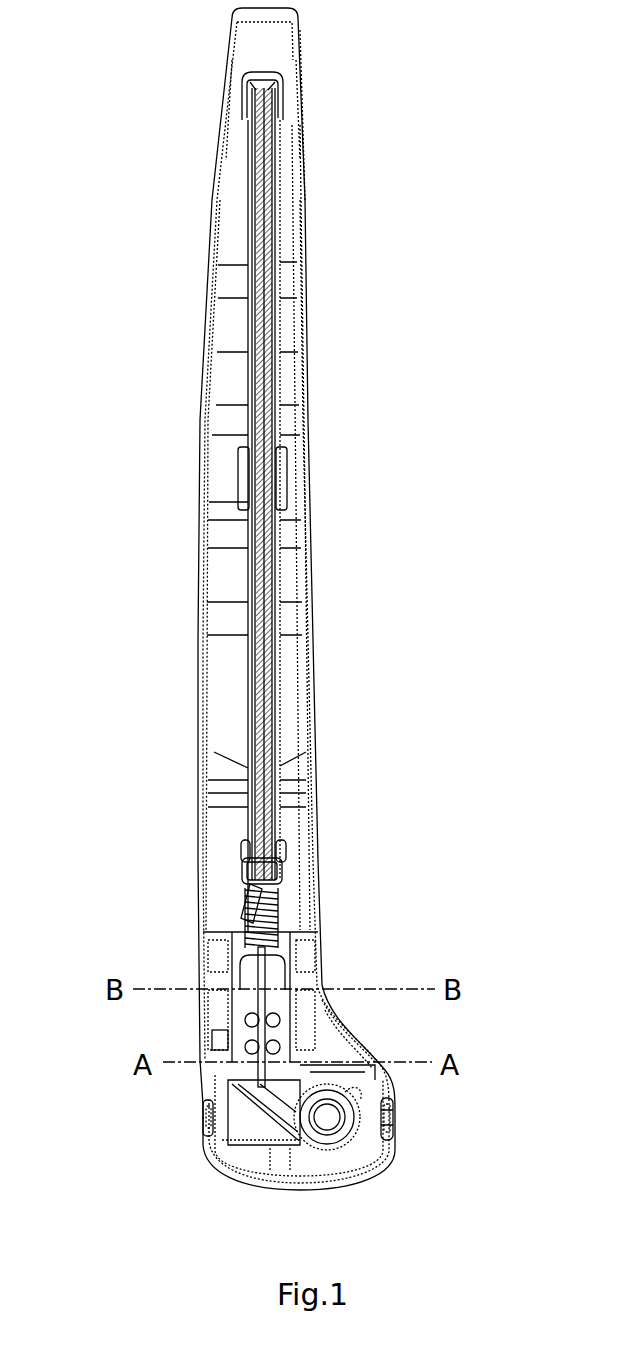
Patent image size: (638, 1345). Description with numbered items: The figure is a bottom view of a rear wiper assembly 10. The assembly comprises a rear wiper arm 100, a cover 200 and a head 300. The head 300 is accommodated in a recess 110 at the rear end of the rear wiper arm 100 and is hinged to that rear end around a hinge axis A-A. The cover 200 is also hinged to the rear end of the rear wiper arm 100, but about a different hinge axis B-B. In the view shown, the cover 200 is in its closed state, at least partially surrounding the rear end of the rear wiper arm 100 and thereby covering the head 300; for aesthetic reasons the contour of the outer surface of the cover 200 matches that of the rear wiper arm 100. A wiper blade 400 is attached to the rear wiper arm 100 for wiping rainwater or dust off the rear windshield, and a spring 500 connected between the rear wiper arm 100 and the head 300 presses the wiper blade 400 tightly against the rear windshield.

The rear wiper assembly 10 is at (122, 249).
The rear wiper arm 100 is at (314, 752).
The recess 110 is at (260, 1147).
The cover 200 is at (392, 1115).
The head 300 is at (343, 1120).
The wiper blade 400 is at (257, 407).
The spring 500 is at (277, 913).